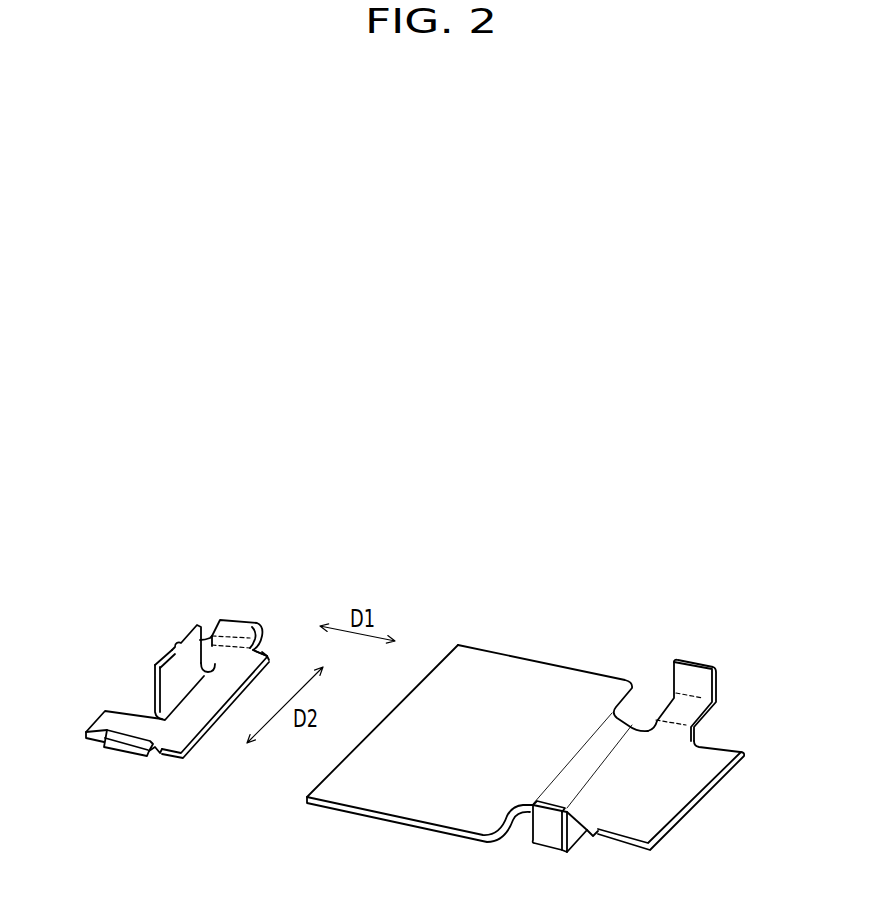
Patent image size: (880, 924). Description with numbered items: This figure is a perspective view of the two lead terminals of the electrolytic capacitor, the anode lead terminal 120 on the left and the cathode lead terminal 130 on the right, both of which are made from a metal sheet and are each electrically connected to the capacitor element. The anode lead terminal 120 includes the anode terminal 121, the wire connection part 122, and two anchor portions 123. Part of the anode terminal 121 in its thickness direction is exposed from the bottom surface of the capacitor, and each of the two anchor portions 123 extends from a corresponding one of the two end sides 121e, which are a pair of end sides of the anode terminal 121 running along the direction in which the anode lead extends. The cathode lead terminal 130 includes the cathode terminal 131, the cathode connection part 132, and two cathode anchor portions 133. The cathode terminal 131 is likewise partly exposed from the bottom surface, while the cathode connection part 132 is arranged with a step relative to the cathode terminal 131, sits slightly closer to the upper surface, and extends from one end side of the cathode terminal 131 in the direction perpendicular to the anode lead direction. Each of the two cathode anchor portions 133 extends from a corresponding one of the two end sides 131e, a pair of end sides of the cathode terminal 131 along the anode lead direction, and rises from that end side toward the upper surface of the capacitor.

The anode lead terminal 120 is at (113, 574).
The anode terminal 121 is at (184, 730).
The end sides 121e is at (267, 643).
The wire connection part 122 is at (158, 678).
The anchor portions 123 is at (228, 620).
The cathode lead terminal 130 is at (472, 585).
The cathode terminal 131 is at (686, 788).
The end sides 131e is at (718, 734).
The cathode connection part 132 is at (407, 803).
The cathode anchor portions 133 is at (684, 660).